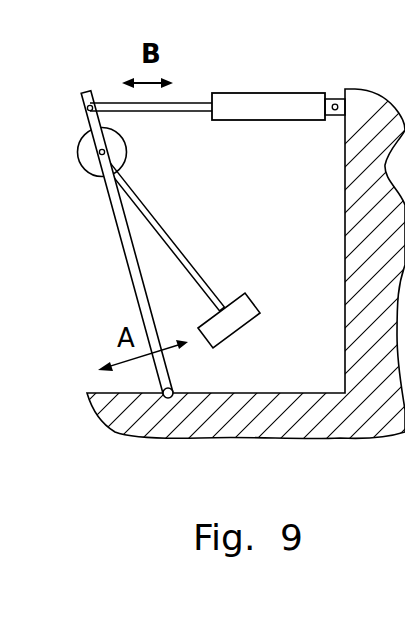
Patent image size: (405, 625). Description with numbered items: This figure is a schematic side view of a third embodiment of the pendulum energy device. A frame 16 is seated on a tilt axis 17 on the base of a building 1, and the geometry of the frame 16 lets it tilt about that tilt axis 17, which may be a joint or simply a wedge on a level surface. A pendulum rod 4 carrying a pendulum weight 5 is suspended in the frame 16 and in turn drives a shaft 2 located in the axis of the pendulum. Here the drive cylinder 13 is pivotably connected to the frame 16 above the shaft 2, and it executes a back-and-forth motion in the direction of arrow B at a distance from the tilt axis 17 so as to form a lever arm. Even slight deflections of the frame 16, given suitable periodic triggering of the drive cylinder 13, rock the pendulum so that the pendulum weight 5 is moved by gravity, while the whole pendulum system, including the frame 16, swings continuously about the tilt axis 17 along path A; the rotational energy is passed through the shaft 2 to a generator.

The building 1 is at (353, 246).
The shaft 2 is at (85, 146).
The pendulum rod 4 is at (162, 228).
The pendulum weight 5 is at (258, 303).
The drive cylinder 13 is at (253, 105).
The frame 16 is at (127, 242).
The tilt axis 17 is at (163, 392).